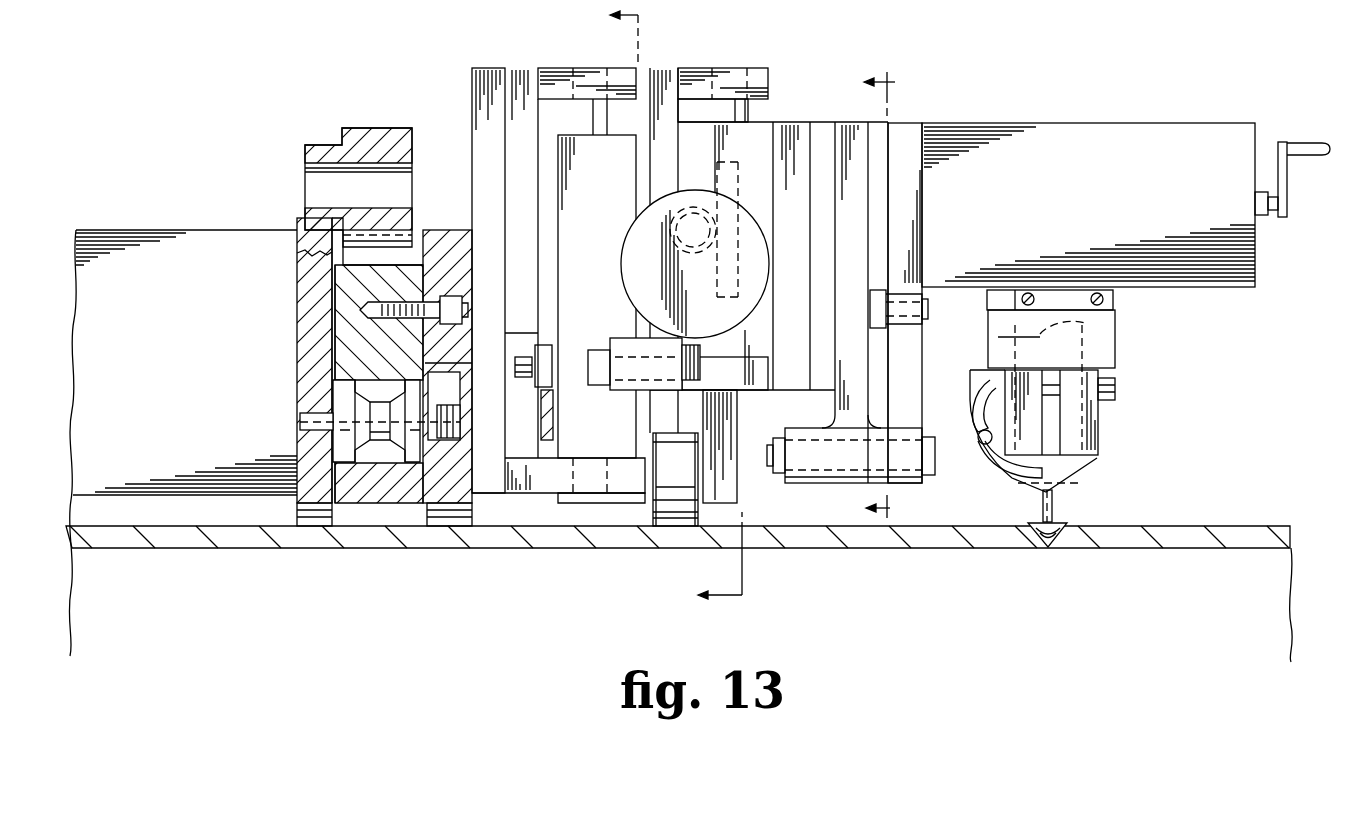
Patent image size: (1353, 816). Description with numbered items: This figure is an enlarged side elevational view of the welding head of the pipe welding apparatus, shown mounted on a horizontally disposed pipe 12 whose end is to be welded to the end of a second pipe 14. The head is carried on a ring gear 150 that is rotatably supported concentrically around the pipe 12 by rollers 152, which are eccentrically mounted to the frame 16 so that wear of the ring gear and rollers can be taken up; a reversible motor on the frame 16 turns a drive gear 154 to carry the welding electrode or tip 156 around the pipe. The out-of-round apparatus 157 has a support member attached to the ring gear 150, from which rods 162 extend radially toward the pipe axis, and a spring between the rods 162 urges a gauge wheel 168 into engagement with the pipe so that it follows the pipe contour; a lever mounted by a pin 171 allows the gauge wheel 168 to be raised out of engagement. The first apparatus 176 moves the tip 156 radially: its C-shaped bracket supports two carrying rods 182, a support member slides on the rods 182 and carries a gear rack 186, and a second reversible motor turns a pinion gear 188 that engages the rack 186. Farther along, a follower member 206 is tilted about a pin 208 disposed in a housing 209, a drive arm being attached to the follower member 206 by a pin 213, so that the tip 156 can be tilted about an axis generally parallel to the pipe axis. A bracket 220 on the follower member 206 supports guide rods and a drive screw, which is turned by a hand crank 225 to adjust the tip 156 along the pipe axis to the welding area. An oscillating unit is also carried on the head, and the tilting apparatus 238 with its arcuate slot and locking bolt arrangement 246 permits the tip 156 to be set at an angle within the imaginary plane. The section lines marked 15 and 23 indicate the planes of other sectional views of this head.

The pipe 12 is at (823, 540).
The second pipe 14 is at (1174, 521).
The section line 15 is at (661, 307).
The frame 16 is at (157, 233).
The section line 23 is at (862, 296).
The ring gear 150 is at (345, 350).
The rollers 152 is at (343, 408).
The drive gear 154 is at (310, 152).
The welding electrode or tip 156 is at (1056, 514).
The out-of-round apparatus 157 is at (528, 64).
The rods 162 is at (585, 128).
The gauge wheel 168 is at (677, 515).
The pin 171 is at (518, 356).
The first apparatus 176 is at (775, 66).
The carrying rods 182 is at (753, 115).
The gear rack 186 is at (737, 168).
The pinion gear 188 is at (673, 223).
The follower member 206 is at (913, 122).
The pin 208 is at (935, 460).
The housing 209 is at (813, 485).
The pin 213 is at (927, 308).
The bracket 220 is at (1097, 122).
The hand crank 225 is at (1288, 180).
The tilting apparatus 238 is at (1112, 379).
The locking bolt arrangement 246 is at (980, 440).